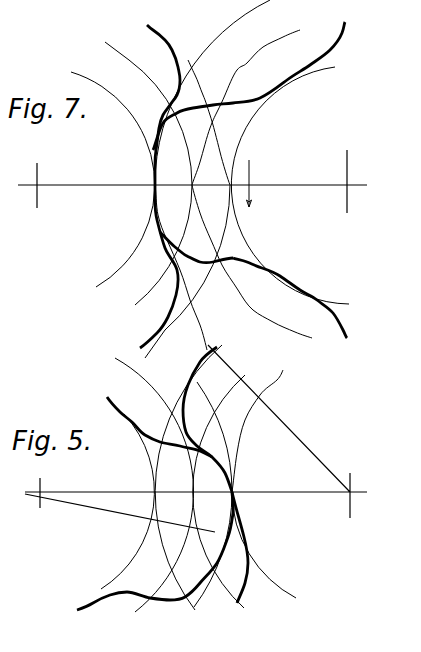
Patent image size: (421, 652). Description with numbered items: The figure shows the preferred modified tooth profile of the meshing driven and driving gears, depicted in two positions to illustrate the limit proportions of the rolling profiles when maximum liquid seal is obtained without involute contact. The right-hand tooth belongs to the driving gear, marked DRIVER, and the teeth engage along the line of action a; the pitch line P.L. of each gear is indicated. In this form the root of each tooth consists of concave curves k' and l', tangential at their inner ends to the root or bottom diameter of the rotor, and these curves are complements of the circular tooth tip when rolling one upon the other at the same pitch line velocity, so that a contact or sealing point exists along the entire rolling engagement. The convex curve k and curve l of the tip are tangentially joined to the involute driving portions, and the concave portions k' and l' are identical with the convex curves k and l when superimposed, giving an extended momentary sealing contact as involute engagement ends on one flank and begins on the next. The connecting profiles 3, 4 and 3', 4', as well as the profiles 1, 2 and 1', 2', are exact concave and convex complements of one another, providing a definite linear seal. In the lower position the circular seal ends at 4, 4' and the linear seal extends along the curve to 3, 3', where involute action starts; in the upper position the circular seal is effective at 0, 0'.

In FIG. 7, the pitch line P.L. is at (202, 183).
In FIG. 7, the circular seal point 0 is at (247, 209).
In FIG. 7, the circular seal point 0' is at (170, 175).
In FIG. 7, the convex curve k is at (249, 91).
In FIG. 7, the concave curve k' is at (152, 105).
In FIG. 7, the line of action a is at (201, 171).
In FIG. 5, the line of action a is at (191, 503).
In FIG. 7, the convex curve l is at (196, 245).
In FIG. 7, the concave curve l' is at (149, 266).
In FIG. 7, the profile point 1 is at (170, 214).
In FIG. 5, the profile point 1 is at (193, 477).
In FIG. 7, the profile point 1' is at (141, 210).
In FIG. 5, the profile point 1' is at (156, 493).
In FIG. 7, the profile point 2 is at (203, 256).
In FIG. 5, the profile point 2 is at (216, 491).
In FIG. 7, the profile point 2' is at (154, 266).
In FIG. 5, the profile point 2' is at (154, 485).
In FIG. 7, the profile point 3 is at (232, 254).
In FIG. 5, the profile point 3 is at (252, 484).
In FIG. 7, the profile point 3' is at (170, 293).
In FIG. 5, the profile point 3' is at (213, 494).
In FIG. 7, the profile point 4 is at (290, 298).
In FIG. 5, the profile point 4 is at (242, 548).
In FIG. 7, the profile point 4' is at (153, 329).
In FIG. 5, the profile point 4' is at (155, 551).
In FIG. 5, the driving gear DRIVER is at (265, 438).